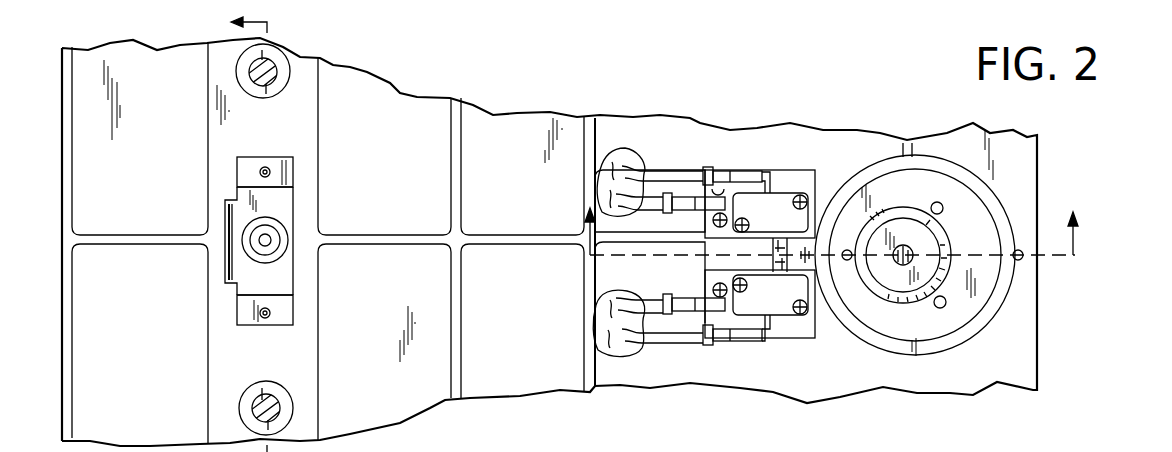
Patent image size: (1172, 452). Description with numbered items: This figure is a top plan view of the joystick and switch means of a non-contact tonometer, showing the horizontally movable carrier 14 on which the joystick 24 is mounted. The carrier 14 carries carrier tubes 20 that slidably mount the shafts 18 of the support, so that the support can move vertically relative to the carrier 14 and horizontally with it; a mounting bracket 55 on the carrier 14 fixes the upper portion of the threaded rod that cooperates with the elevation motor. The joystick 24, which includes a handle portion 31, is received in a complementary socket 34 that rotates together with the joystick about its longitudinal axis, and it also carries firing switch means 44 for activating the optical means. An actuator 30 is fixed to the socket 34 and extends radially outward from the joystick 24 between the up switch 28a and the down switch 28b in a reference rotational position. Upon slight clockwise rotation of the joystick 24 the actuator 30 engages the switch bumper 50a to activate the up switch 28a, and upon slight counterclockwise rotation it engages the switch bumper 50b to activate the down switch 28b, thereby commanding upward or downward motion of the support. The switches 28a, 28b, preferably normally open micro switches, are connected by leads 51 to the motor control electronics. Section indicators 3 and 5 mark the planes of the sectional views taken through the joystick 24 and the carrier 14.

The section line 3- 3 is at (834, 247).
The section line 5- 5 is at (272, 233).
The carrier 14 is at (490, 130).
The shafts 18 is at (292, 407).
The carrier tubes 20 is at (245, 78).
The joystick 24 is at (930, 312).
The up switch 28a is at (770, 205).
The down switch 28b is at (770, 320).
The actuator 30 is at (773, 262).
The handle portion 31 is at (905, 230).
The socket 34 is at (850, 207).
The firing switch means 44 is at (944, 212).
The switch bumper 50a is at (782, 200).
The switch bumper 50b is at (784, 318).
The leads 51 is at (598, 200).
The mounting bracket 55 is at (248, 273).